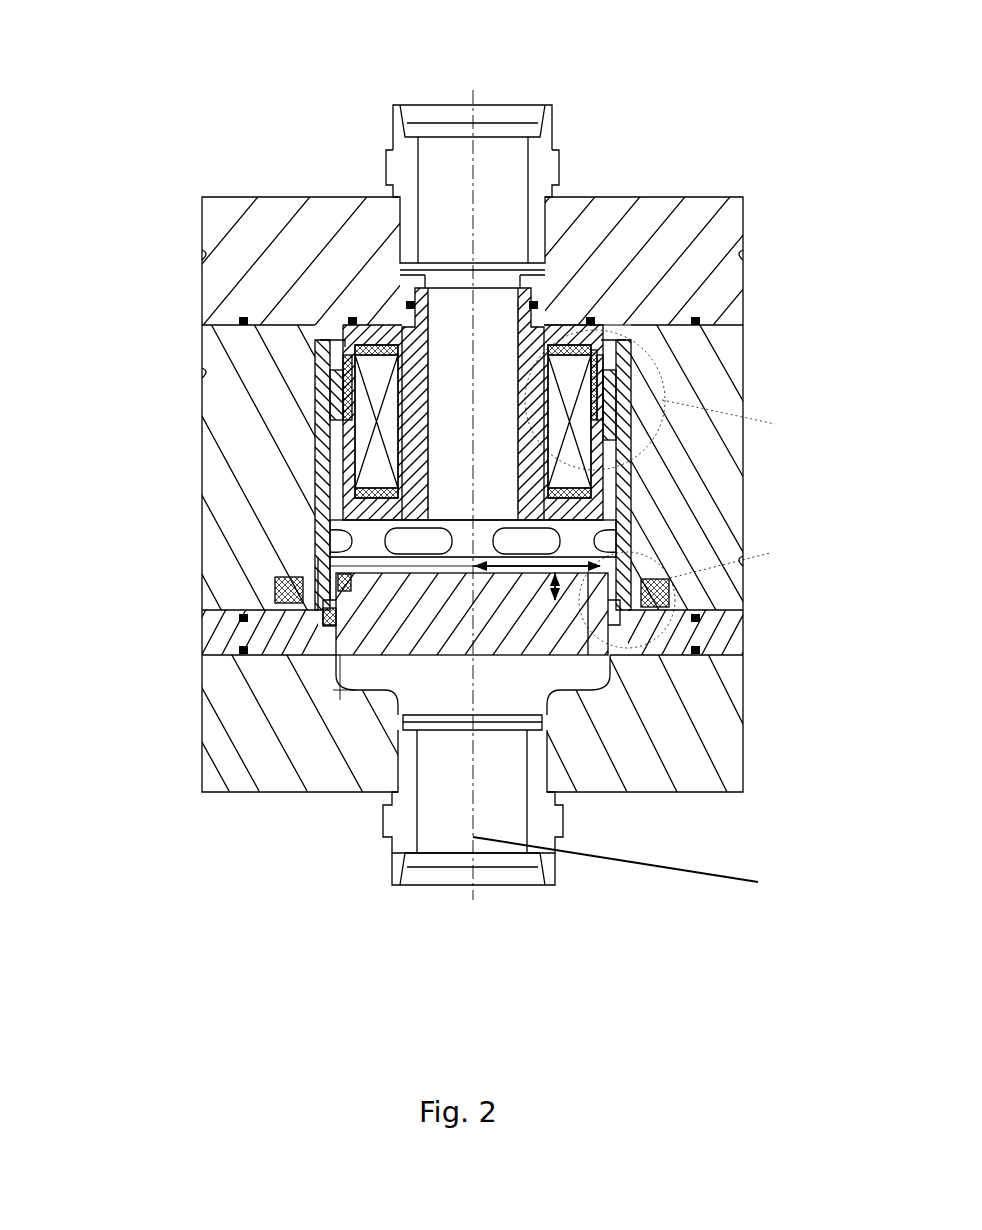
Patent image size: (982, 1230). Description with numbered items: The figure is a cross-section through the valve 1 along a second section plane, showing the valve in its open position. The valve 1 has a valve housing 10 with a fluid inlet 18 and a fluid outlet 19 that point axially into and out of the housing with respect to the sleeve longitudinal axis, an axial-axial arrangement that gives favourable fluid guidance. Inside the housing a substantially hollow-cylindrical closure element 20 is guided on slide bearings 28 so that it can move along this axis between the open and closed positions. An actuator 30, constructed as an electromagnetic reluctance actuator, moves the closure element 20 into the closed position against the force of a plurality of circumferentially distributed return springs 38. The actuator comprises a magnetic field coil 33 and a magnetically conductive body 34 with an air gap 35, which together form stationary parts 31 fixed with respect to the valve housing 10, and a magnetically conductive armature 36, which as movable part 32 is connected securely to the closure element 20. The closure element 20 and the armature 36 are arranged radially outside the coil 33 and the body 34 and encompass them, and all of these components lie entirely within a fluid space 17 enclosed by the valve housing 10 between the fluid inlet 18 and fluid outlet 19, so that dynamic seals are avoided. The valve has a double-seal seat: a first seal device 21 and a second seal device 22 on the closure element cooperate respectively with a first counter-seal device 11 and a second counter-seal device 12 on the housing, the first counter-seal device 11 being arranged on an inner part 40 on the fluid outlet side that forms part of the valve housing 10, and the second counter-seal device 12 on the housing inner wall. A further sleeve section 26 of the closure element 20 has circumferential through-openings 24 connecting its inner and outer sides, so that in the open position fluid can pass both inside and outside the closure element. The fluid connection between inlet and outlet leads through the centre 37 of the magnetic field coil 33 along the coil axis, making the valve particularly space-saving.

The valve 1 is at (283, 128).
The valve housing 10 is at (693, 220).
The first counter-seal device 11 is at (328, 587).
The second counter-seal device 12 is at (314, 636).
The fluid space 17 is at (453, 315).
The fluid inlet 18 is at (508, 88).
The fluid outlet 19 is at (416, 908).
The closure element 20 is at (330, 530).
The first seal device 21 is at (330, 579).
The second seal device 22 is at (325, 613).
The through-openings 24 is at (528, 538).
The further sleeve section 26 is at (568, 530).
The slide bearings 28 is at (313, 480).
The actuator 30 is at (620, 324).
The stationary parts 31 is at (600, 362).
The movable part 32 is at (607, 392).
The magnetic field coil 33 is at (366, 436).
The magnetically conductive body 34 is at (360, 334).
The air gap 35 is at (350, 398).
The armature 36 is at (335, 396).
The centre of the magnetic field coil 37 is at (446, 344).
The return springs 38 is at (298, 579).
The inner part 40 is at (378, 645).